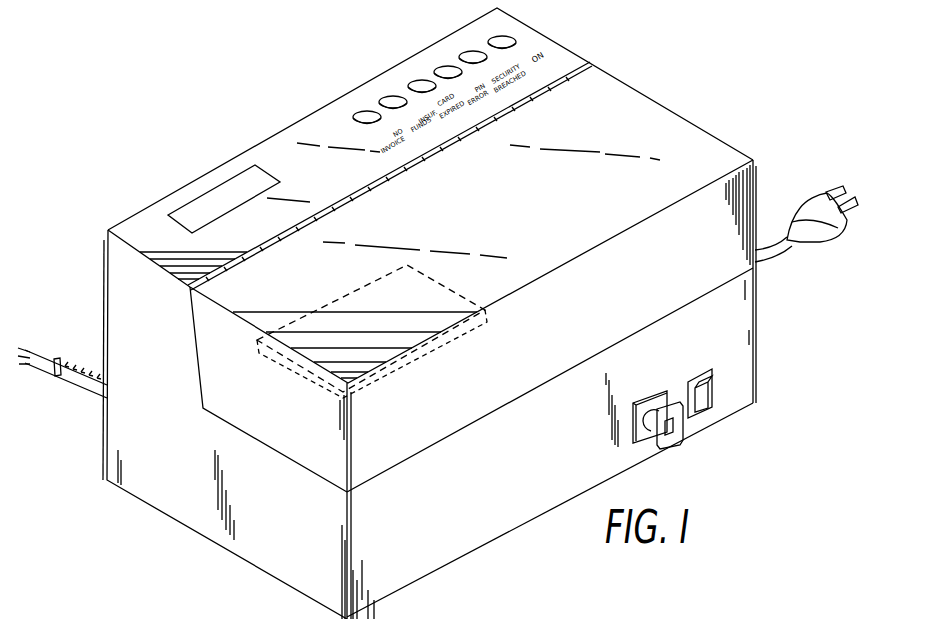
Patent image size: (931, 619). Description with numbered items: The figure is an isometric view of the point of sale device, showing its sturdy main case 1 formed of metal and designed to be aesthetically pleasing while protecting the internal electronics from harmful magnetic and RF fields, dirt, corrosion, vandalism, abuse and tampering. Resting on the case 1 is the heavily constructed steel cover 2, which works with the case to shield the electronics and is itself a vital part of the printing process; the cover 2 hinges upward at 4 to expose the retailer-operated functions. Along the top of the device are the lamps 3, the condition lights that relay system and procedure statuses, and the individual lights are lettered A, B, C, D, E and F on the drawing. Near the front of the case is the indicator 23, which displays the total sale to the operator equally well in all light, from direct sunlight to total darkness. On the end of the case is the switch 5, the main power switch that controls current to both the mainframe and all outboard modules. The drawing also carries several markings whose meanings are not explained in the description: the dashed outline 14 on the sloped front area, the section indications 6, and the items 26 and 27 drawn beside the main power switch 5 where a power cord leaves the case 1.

The main case 1 is at (220, 527).
The cover 2 is at (247, 415).
The lamps 3 is at (436, 0).
The hinge 4 is at (590, 62).
The main power switch 5 is at (186, 165).
The card slot section 6 is at (263, 358).
The card 14 is at (490, 324).
The indicator 23 is at (192, 208).
The receptacle 26 is at (646, 437).
The plug 27 is at (683, 446).
The button A is at (502, 36).
The button B is at (473, 51).
The button C is at (448, 66).
The button D is at (422, 80).
The button E is at (393, 96).
The button F is at (367, 111).